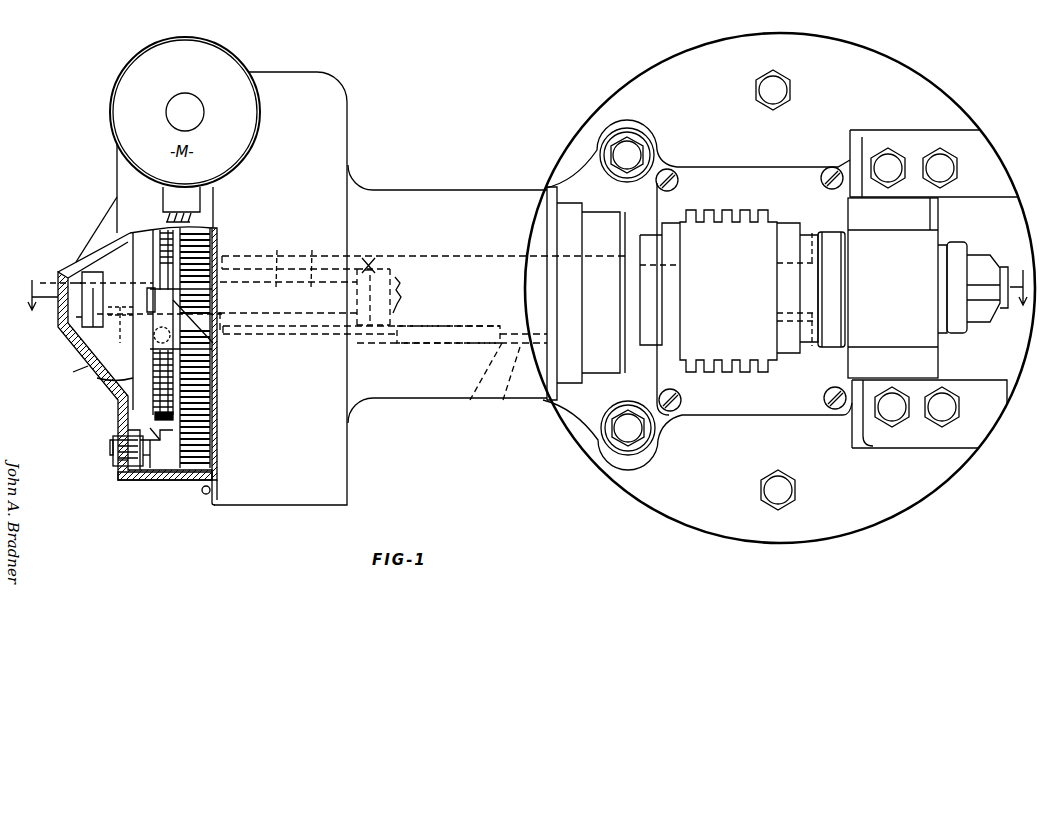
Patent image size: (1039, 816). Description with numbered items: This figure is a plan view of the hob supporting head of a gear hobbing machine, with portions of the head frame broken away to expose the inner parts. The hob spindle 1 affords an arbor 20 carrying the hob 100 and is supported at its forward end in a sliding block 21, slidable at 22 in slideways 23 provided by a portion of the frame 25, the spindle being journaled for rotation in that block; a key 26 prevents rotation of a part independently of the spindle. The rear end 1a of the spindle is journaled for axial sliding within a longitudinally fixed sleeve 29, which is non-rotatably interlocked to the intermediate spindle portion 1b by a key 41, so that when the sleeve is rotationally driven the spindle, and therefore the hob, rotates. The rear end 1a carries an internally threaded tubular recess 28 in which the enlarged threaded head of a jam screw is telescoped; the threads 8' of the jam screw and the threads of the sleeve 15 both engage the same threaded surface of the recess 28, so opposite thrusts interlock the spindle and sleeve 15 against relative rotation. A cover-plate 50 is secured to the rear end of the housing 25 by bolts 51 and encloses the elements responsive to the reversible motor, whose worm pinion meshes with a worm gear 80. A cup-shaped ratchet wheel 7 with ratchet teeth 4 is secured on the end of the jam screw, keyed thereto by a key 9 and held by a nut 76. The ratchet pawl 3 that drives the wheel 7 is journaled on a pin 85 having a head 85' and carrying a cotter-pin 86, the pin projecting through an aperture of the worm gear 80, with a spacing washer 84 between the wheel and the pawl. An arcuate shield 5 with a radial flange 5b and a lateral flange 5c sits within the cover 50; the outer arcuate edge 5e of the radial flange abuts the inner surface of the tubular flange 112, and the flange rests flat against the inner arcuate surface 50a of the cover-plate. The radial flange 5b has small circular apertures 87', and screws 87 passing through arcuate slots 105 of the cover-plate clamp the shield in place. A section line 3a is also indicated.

The hob spindle 1 is at (633, 262).
The rear end of spindle 1a is at (370, 256).
The intermediate spindle portion 1b is at (511, 334).
The ratchet pawl 3 is at (142, 218).
The section line 3a is at (1017, 300).
The ratchet teeth 4 is at (157, 415).
The arcuate shield element 5 is at (133, 459).
The radial flange 5b is at (137, 437).
The lateral flange 5c is at (155, 425).
The outer arcuate edge 5e is at (143, 463).
The ratchet wheel 7 is at (75, 375).
The threads 8' is at (388, 252).
The key 9 is at (97, 374).
The sleeve 15 is at (308, 261).
The arbor 20 is at (811, 236).
The sliding block 21 is at (928, 242).
The slide 22 is at (937, 201).
The slideways 23 is at (1005, 197).
The frame 25 is at (343, 125).
The key 26 is at (811, 348).
The internally threaded tubular recess 28 is at (397, 278).
The sleeve 29 is at (504, 385).
The key 41 is at (478, 383).
The cover-plate 50 is at (80, 256).
The inner planular arcuate surface 50a is at (117, 463).
The bolts 51 is at (205, 497).
The nut 76 is at (82, 340).
The worm gear 80 is at (197, 470).
The spacing washer 84 is at (213, 343).
The pin 85 is at (200, 315).
The head 85' is at (206, 261).
The cotter-pin 86 is at (150, 292).
The screws 87 is at (81, 434).
The small circular apertures 87' is at (196, 348).
The hob 100 is at (760, 210).
The arcuate slots 105 is at (112, 447).
The tubular flange 112 is at (148, 480).